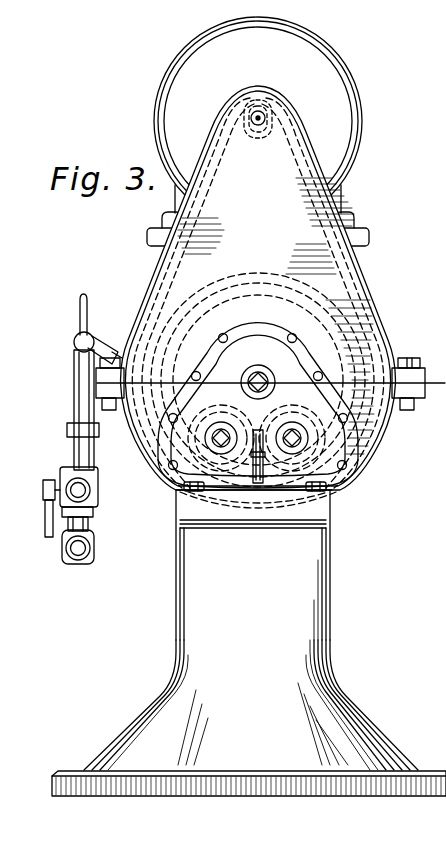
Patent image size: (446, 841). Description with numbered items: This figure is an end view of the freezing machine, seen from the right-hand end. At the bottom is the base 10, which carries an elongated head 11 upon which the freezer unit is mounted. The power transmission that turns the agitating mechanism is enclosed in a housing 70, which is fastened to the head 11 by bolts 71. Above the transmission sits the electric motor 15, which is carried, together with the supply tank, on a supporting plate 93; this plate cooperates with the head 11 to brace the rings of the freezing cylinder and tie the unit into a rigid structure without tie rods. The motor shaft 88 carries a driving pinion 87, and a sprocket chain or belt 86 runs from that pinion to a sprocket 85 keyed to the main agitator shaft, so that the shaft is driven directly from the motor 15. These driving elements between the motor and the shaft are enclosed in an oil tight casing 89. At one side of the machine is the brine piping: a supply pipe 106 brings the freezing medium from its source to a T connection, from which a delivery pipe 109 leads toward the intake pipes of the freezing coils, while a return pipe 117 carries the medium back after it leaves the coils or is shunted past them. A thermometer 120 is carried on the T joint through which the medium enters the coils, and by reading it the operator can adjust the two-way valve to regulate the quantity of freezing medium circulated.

The base 10 is at (345, 718).
The elongated head 11 is at (254, 565).
The electric motor 15 is at (332, 88).
The housing 70 is at (362, 462).
The bolts 71 is at (333, 487).
The sprocket 85 is at (362, 302).
The sprocket chain or belt 86 is at (356, 166).
The driving pinion 87 is at (300, 112).
The motor shaft 88 is at (298, 130).
The oil tight casing 89 is at (345, 272).
The supporting plate 93 is at (148, 240).
The supply pipe 106 is at (90, 487).
The delivery pipe 109 is at (82, 413).
The return pipe 117 is at (92, 548).
The thermometer 120 is at (80, 309).